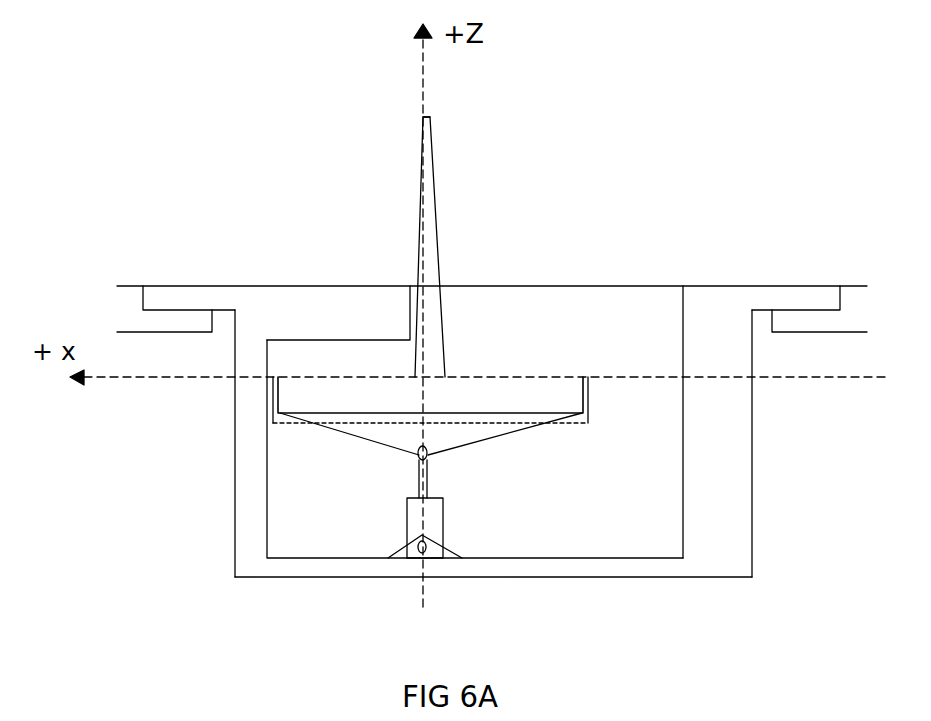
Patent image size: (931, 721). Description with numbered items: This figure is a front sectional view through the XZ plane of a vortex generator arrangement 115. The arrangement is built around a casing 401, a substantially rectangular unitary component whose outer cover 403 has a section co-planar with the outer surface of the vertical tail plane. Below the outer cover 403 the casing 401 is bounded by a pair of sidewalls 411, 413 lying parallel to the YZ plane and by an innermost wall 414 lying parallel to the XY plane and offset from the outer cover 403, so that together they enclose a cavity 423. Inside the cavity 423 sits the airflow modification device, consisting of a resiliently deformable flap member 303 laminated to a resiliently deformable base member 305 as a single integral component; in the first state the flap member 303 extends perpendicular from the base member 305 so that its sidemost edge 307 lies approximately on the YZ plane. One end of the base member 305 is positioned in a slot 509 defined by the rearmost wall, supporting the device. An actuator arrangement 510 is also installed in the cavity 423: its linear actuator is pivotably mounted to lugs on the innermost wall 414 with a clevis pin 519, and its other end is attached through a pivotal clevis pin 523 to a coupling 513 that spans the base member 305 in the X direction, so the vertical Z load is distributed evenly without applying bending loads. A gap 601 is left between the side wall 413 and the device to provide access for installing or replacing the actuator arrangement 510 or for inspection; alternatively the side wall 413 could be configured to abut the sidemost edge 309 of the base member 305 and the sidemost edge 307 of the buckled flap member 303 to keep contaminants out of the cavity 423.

The vortex generator arrangement 115 is at (623, 158).
The resiliently deformable flap member 303 is at (417, 245).
The resiliently deformable base member 305 is at (352, 402).
The sidemost edge of the flap member 307 is at (430, 117).
The sidemost edge of the base member 309 is at (585, 380).
The casing 401 is at (742, 572).
The outer cover 403 is at (233, 287).
The sidewall 411 is at (250, 493).
The side wall 413 is at (727, 457).
The innermost wall 414 is at (632, 573).
The cavity 423 is at (520, 487).
The slot 509 is at (587, 421).
The actuator arrangement 510 is at (405, 515).
The coupling 513 is at (385, 435).
The clevis pin 519 is at (407, 557).
The pivotal clevis pin 523 is at (420, 456).
The gap 601 is at (630, 407).